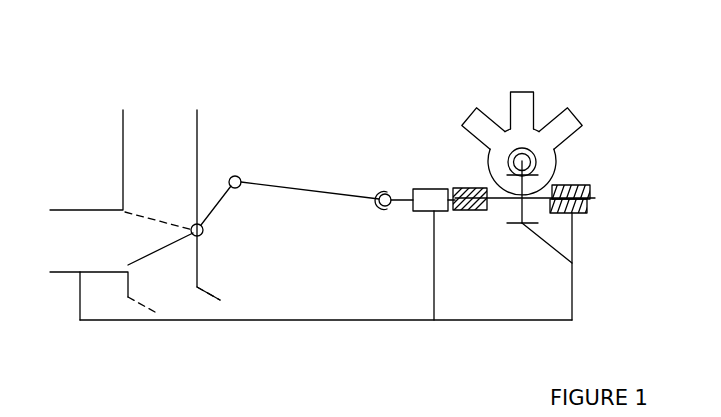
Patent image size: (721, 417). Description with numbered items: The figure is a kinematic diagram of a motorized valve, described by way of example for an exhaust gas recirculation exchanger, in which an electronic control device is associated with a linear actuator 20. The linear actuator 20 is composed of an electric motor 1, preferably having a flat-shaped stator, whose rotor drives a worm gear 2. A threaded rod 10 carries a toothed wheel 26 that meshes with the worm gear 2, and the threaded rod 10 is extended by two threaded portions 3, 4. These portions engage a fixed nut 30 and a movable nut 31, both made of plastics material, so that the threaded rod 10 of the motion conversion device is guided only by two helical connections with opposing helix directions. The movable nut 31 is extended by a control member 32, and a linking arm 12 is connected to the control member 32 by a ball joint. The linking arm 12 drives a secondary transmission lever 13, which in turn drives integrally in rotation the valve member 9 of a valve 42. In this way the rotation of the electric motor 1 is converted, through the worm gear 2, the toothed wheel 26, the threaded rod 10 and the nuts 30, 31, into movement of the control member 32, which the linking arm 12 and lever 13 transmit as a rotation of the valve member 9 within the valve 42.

The electric motor 1 is at (573, 148).
The worm gear 2 is at (513, 152).
The threaded portion 3 is at (587, 204).
The threaded portion 4 is at (470, 210).
The valve member 9 is at (170, 252).
The threaded rod 10 is at (503, 200).
The linking arm 12 is at (293, 183).
The secondary transmission lever 13 is at (213, 213).
The linear actuator 20 is at (372, 102).
The toothed wheel 26 is at (572, 263).
The fixed nut 30 is at (575, 182).
The movable nut 31 is at (467, 183).
The control member 32 is at (405, 203).
The valve 42 is at (125, 190).